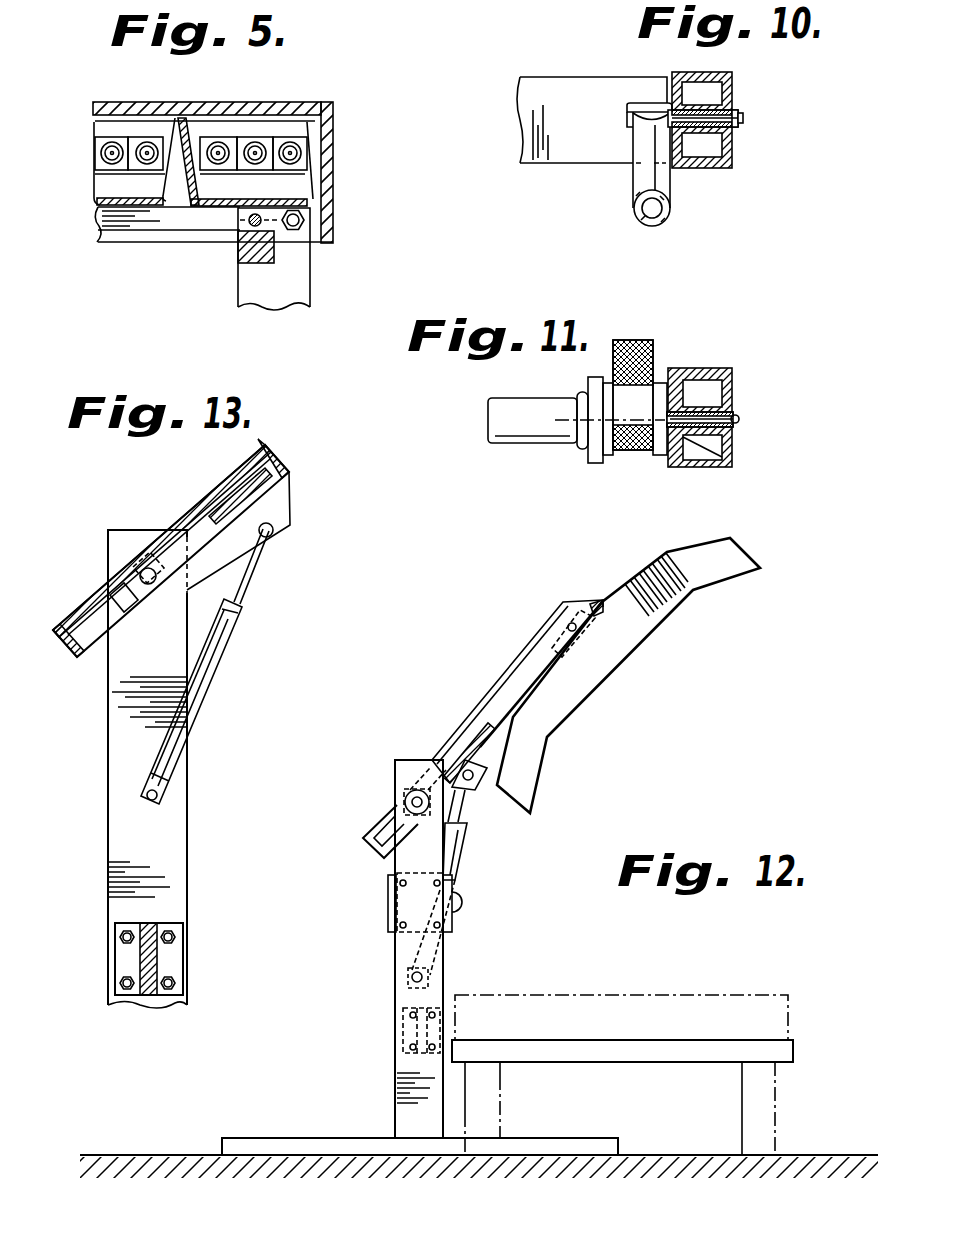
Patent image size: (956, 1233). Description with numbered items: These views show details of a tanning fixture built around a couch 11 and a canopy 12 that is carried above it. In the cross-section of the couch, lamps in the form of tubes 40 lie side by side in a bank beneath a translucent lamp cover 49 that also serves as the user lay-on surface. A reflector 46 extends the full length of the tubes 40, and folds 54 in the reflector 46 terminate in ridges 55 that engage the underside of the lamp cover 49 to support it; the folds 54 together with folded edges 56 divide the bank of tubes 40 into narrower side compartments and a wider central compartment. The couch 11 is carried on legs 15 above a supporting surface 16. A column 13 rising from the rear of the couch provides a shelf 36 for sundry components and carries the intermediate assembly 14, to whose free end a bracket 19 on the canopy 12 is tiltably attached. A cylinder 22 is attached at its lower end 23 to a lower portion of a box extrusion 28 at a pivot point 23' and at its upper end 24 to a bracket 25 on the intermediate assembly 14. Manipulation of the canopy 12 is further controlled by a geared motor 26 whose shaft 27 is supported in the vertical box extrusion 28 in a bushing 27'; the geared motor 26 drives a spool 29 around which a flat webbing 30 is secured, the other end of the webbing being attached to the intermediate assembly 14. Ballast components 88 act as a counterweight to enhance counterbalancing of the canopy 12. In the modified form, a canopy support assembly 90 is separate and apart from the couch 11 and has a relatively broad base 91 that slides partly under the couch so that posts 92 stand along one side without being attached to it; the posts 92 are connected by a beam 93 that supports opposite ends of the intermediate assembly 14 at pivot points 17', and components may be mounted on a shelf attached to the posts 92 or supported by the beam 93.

In FIG. 5, the couch 11 is at (335, 180).
In FIG. 12, the couch 11 is at (658, 1047).
In FIG. 12, the canopy 12 is at (707, 567).
In FIG. 13, the column 13 is at (110, 893).
In FIG. 13, the intermediate assembly 14 is at (237, 469).
In FIG. 12, the intermediate assembly 14 is at (518, 655).
In FIG. 5, the legs 15 is at (280, 293).
In FIG. 12, the supporting surface 16 is at (688, 1155).
In FIG. 13, the pivot points 17' is at (146, 605).
In FIG. 12, the pivot points 17' is at (424, 753).
In FIG. 12, the bracket 19 is at (592, 627).
In FIG. 13, the hydraulic cylinder 22 is at (228, 643).
In FIG. 12, the hydraulic cylinder 22 is at (470, 843).
In FIG. 10, the lower end of cylinder 23 is at (619, 164).
In FIG. 13, the lower end of cylinder 23 is at (219, 739).
In FIG. 10, the pivot point 23' is at (730, 91).
In FIG. 13, the pivot point 23' is at (199, 809).
In FIG. 12, the pivot point 23' is at (372, 954).
In FIG. 13, the upper end of cylinder 24 is at (253, 572).
In FIG. 13, the bracket 25 is at (275, 515).
In FIG. 11, the geared motor 26 is at (507, 413).
In FIG. 11, the shaft 27 is at (735, 417).
In FIG. 11, the bushing 27' is at (758, 472).
In FIG. 10, the box extrusion 28 is at (732, 155).
In FIG. 11, the box extrusion 28 is at (733, 380).
In FIG. 13, the box extrusion 28 is at (122, 535).
In FIG. 11, the spool 29 is at (608, 430).
In FIG. 11, the flat webbing 30 is at (640, 340).
In FIG. 10, the shelf 36 is at (562, 95).
In FIG. 5, the tubes 40 is at (142, 150).
In FIG. 5, the reflector 46 is at (122, 193).
In FIG. 5, the lamp cover 49 is at (262, 102).
In FIG. 5, the folds 54 is at (208, 185).
In FIG. 5, the ridges 55 is at (182, 118).
In FIG. 5, the folded edges 56 is at (307, 193).
In FIG. 13, the ballast components 88 is at (88, 657).
In FIG. 12, the canopy support assembly 90 is at (380, 1058).
In FIG. 12, the base 91 is at (550, 1142).
In FIG. 13, the posts 92 is at (165, 840).
In FIG. 12, the posts 92 is at (403, 993).
In FIG. 13, the beam 93 is at (163, 922).
In FIG. 12, the beam 93 is at (428, 1005).